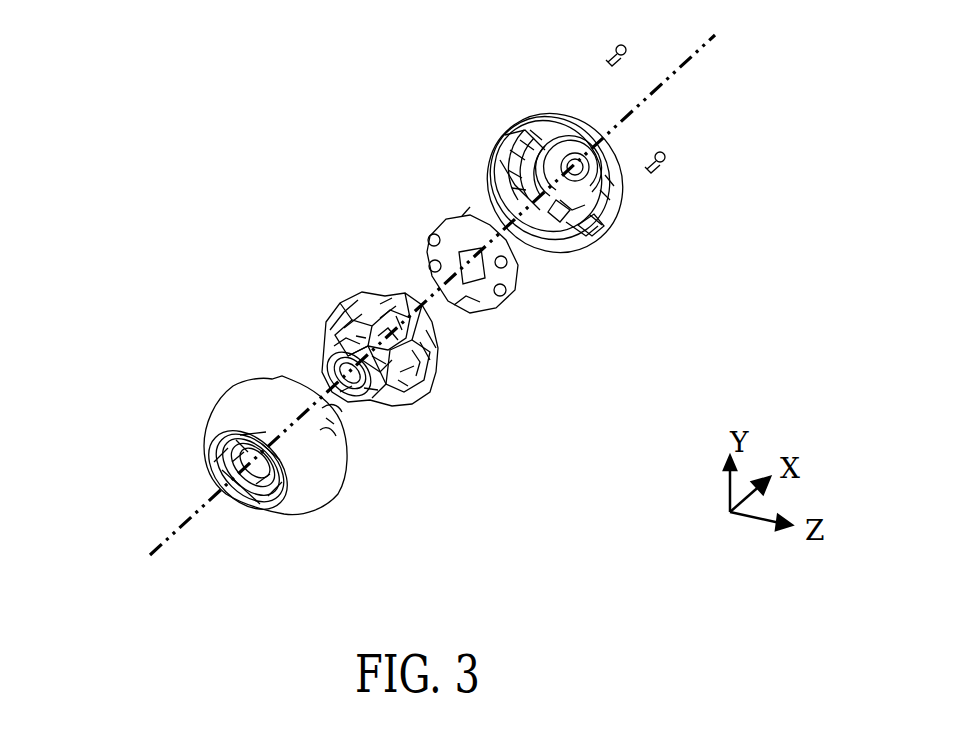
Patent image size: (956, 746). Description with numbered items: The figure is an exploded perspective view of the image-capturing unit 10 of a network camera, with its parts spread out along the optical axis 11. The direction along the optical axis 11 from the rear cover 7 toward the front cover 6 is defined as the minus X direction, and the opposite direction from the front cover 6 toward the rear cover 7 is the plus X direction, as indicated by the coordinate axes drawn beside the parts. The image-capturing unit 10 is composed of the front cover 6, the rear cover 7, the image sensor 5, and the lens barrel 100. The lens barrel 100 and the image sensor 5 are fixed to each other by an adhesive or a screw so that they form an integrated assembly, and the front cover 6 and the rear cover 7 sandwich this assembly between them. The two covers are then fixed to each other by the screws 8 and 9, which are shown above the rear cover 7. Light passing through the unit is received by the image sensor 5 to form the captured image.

The image-capturing unit 10 is at (180, 38).
The optical axis 11 is at (185, 520).
The front cover 6 is at (233, 386).
The lens barrel 100 is at (438, 380).
The image sensor 5 is at (470, 265).
The rear cover 7 is at (605, 168).
The screw 8 is at (622, 56).
The screw 9 is at (665, 165).